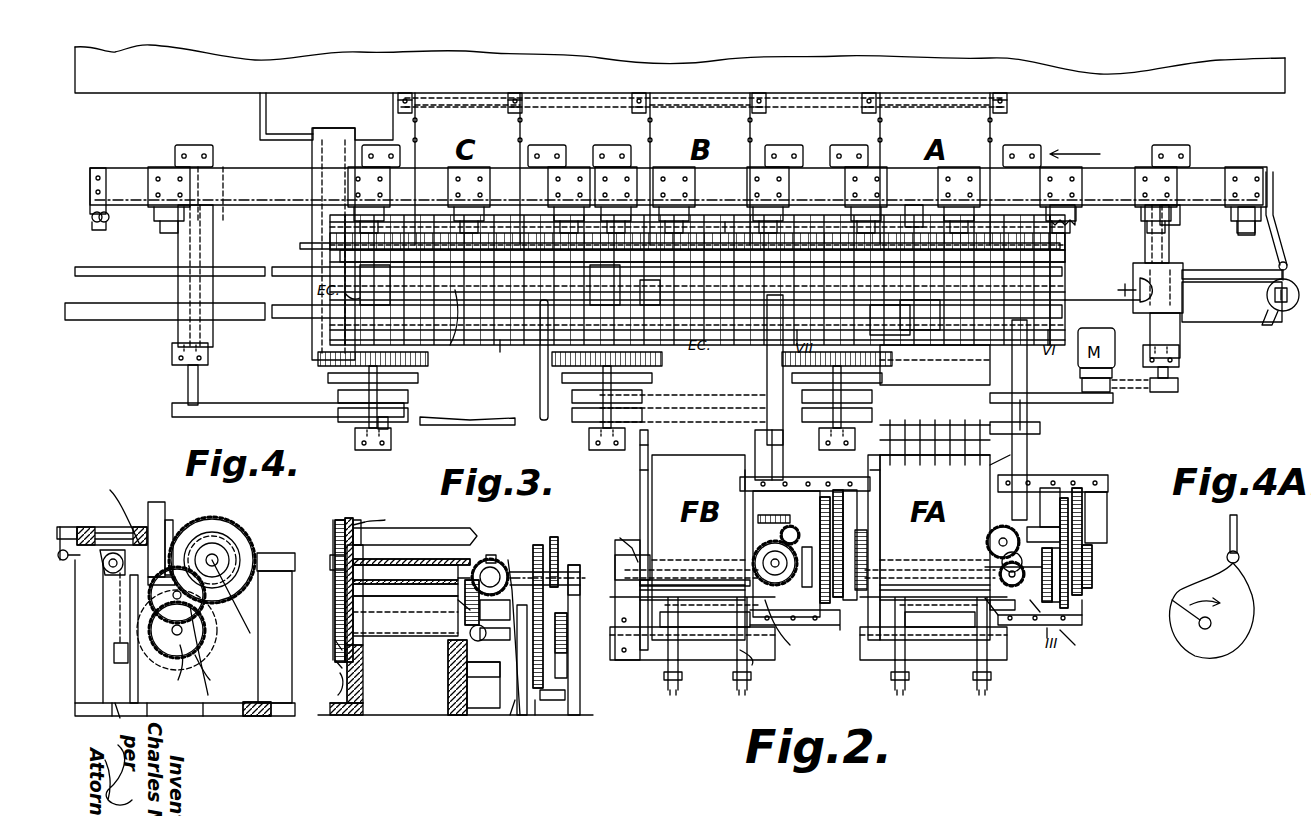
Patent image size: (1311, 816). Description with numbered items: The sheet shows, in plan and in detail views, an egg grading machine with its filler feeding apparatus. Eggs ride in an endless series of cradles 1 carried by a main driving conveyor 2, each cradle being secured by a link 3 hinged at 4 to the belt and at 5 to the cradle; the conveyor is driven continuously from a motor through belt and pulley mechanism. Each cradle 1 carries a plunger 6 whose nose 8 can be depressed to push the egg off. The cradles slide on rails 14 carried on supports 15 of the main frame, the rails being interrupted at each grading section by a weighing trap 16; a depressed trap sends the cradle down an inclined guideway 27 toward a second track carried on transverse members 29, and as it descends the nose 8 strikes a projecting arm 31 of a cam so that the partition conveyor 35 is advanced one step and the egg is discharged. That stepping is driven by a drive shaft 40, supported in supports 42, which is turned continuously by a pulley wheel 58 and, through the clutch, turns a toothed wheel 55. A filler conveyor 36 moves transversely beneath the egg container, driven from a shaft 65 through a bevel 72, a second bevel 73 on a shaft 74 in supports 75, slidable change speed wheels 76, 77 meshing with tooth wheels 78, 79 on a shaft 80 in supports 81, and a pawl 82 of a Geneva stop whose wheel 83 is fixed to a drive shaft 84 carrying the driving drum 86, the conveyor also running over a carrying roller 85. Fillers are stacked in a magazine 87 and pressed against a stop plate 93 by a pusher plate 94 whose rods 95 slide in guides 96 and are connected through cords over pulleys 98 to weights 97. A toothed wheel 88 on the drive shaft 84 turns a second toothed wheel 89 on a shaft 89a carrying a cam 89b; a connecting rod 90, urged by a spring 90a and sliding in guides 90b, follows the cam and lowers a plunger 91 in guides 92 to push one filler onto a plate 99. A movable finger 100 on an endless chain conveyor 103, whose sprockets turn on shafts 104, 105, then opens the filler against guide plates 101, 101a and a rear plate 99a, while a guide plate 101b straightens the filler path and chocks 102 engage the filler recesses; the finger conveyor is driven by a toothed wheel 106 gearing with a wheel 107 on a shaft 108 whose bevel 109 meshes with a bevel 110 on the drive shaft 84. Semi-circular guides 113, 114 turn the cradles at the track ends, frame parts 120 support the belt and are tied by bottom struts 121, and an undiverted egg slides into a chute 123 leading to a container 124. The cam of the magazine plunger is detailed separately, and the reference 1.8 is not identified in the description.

In FIG. 2, the cradle 1 is at (1165, 292).
In FIG. 2, the wheel 1.8 is at (1285, 312).
In FIG. 2, the main driving conveyor 2 is at (1230, 175).
In FIG. 2, the link 3 is at (828, 215).
In FIG. 2, the hinge 4 is at (910, 225).
In FIG. 2, the hinge 5 is at (925, 228).
In FIG. 2, the plunger 6 is at (905, 338).
In FIG. 2, the nose 8 is at (1118, 290).
In FIG. 2, the rail 14 is at (1062, 312).
In FIG. 2, the support 15 is at (730, 240).
In FIG. 2, the weighing platform or trap 16 is at (728, 330).
In FIG. 2, the inclined guideway 27 is at (921, 329).
In FIG. 2, the transverse member 29 is at (312, 270).
In FIG. 2, the projecting arm 31 is at (648, 300).
In FIG. 2, the partition conveyor 35 is at (452, 256).
In FIG. 2, the filler conveyor 36 is at (705, 436).
In FIG. 4, the filler conveyor 36 is at (275, 637).
In FIG. 2, the drive shaft 40 is at (895, 372).
In FIG. 2, the support 42 is at (355, 335).
In FIG. 2, the toothed wheel 55 is at (425, 364).
In FIG. 2, the pulley wheel 58 is at (330, 378).
In FIG. 2, the shaft 65 is at (540, 412).
In FIG. 4, the shaft 65 is at (285, 556).
In FIG. 3, the shaft 65 is at (490, 552).
In FIG. 2, the bevel 72 is at (998, 518).
In FIG. 3, the bevel 72 is at (497, 560).
In FIG. 2, the second bevel 73 is at (1062, 535).
In FIG. 3, the second bevel 73 is at (510, 558).
In FIG. 2, the shaft 74 is at (1068, 540).
In FIG. 4, the shaft 74 is at (214, 604).
In FIG. 3, the shaft 74 is at (580, 580).
In FIG. 2, the support 75 is at (1100, 500).
In FIG. 4, the support 75 is at (252, 672).
In FIG. 3, the support 75 is at (583, 708).
In FIG. 2, the change speed wheel 76 is at (1075, 486).
In FIG. 4, the change speed wheel 76 is at (240, 540).
In FIG. 3, the change speed wheel 76 is at (554, 535).
In FIG. 2, the change speed wheel 77 is at (1066, 496).
In FIG. 4, the change speed wheel 77 is at (240, 535).
In FIG. 3, the change speed wheel 77 is at (545, 550).
In FIG. 2, the tooth wheel 78 is at (1090, 585).
In FIG. 4, the tooth wheel 78 is at (103, 655).
In FIG. 3, the tooth wheel 78 is at (567, 650).
In FIG. 2, the tooth wheel 79 is at (1095, 572).
In FIG. 4, the tooth wheel 79 is at (187, 669).
In FIG. 3, the tooth wheel 79 is at (567, 630).
In FIG. 2, the shaft 80 is at (1092, 552).
In FIG. 4, the shaft 80 is at (206, 655).
In FIG. 3, the shaft 80 is at (540, 705).
In FIG. 2, the support 81 is at (1065, 618).
In FIG. 4, the support 81 is at (117, 697).
In FIG. 3, the support 81 is at (565, 690).
In FIG. 4, the pawl 82 is at (212, 671).
In FIG. 3, the pawl 82 is at (518, 705).
In FIG. 2, the wheel 83 is at (1080, 639).
In FIG. 4, the wheel 83 is at (205, 640).
In FIG. 3, the wheel 83 is at (483, 670).
In FIG. 4, the drive shaft 84 is at (165, 655).
In FIG. 3, the drive shaft 84 is at (426, 652).
In FIG. 2, the carrying roller 85 is at (1000, 113).
In FIG. 3, the driving drum 86 is at (392, 640).
In FIG. 2, the magazine 87 is at (660, 645).
In FIG. 4, the magazine 87 is at (105, 530).
In FIG. 2, the toothed wheel 88 is at (628, 538).
In FIG. 3, the toothed wheel 88 is at (333, 598).
In FIG. 2, the second toothed wheel 89 is at (988, 548).
In FIG. 3, the second toothed wheel 89 is at (326, 685).
In FIG. 2, the shaft 89a is at (1100, 605).
In FIG. 3, the shaft 89a is at (333, 638).
In FIG. 4A, the shaft 89a is at (1172, 600).
In FIG. 2, the cam 89b is at (625, 535).
In FIG. 3, the cam 89b is at (333, 662).
In FIG. 4A, the cam 89b is at (1198, 590).
In FIG. 2, the connecting rod 90 is at (616, 560).
In FIG. 3, the connecting rod 90 is at (345, 522).
In FIG. 3, the spring 90a is at (368, 513).
In FIG. 3, the guide 90b is at (333, 567).
In FIG. 2, the plunger 91 is at (668, 578).
In FIG. 4, the plunger 91 is at (165, 525).
In FIG. 3, the plunger 91 is at (435, 530).
In FIG. 4A, the plunger 91 is at (1226, 545).
In FIG. 4, the guide 92 is at (157, 505).
In FIG. 3, the guide 92 is at (362, 520).
In FIG. 2, the stop plate 93 is at (690, 588).
In FIG. 4, the stop plate 93 is at (172, 530).
In FIG. 2, the pusher plate 94 is at (738, 600).
In FIG. 4, the pusher plate 94 is at (114, 511).
In FIG. 2, the rod 95 is at (740, 640).
In FIG. 4, the rod 95 is at (63, 560).
In FIG. 2, the guide 96 is at (759, 662).
In FIG. 4, the guide 96 is at (66, 532).
In FIG. 4, the weight 97 is at (112, 640).
In FIG. 4, the pulley 98 is at (108, 575).
In FIG. 4, the plate 99 is at (124, 600).
In FIG. 3, the plate 99 is at (405, 590).
In FIG. 4, the rear plate 99a is at (214, 555).
In FIG. 3, the rear plate 99a is at (405, 574).
In FIG. 2, the movable finger 100 is at (760, 568).
In FIG. 2, the guide plate 101 is at (668, 492).
In FIG. 2, the guide plate 101a is at (745, 485).
In FIG. 2, the guide plate 101b is at (642, 455).
In FIG. 2, the chock 102 is at (740, 436).
In FIG. 2, the endless chain conveyor 103 is at (785, 515).
In FIG. 2, the shaft 104 is at (1093, 595).
In FIG. 3, the shaft 104 is at (535, 545).
In FIG. 2, the shaft 105 is at (752, 548).
In FIG. 3, the shaft 105 is at (411, 552).
In FIG. 2, the toothed wheel 106 is at (780, 495).
In FIG. 3, the toothed wheel 106 is at (470, 645).
In FIG. 3, the wheel 107 is at (448, 675).
In FIG. 3, the shaft 108 is at (468, 635).
In FIG. 2, the bevel 109 is at (1014, 590).
In FIG. 3, the bevel 109 is at (460, 605).
In FIG. 2, the bevel 110 is at (985, 600).
In FIG. 3, the bevel 110 is at (460, 578).
In FIG. 2, the semi-circular guide 113 is at (105, 299).
In FIG. 2, the semi-circular guide 114 is at (110, 262).
In FIG. 2, the part of the main frame 120 is at (535, 198).
In FIG. 2, the bottom strut 121 is at (395, 228).
In FIG. 2, the chute 123 is at (312, 227).
In FIG. 2, the container 124 is at (262, 126).